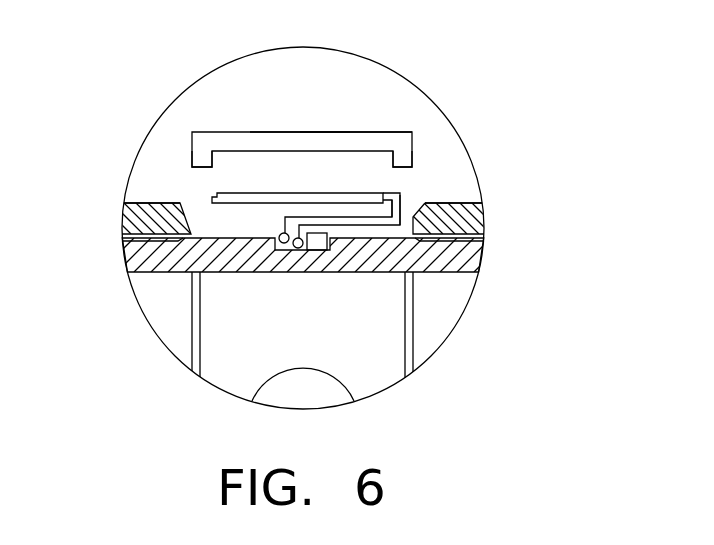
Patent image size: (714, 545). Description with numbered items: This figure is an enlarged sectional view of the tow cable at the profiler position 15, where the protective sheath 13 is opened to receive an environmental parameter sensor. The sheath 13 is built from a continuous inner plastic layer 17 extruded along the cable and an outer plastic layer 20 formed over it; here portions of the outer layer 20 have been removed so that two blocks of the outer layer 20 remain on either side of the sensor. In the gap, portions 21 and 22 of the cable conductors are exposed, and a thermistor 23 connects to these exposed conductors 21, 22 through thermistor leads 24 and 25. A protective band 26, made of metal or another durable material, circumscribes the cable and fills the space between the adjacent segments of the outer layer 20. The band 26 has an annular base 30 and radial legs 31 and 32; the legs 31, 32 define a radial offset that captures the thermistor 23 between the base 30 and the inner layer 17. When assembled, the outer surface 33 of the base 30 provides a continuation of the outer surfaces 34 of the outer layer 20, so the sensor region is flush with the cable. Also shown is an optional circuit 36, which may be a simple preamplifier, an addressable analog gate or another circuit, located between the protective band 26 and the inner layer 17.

The protective sheath 13 is at (492, 260).
The profiler position 15 is at (383, 370).
The inner plastic layer 17 is at (143, 263).
The outer plastic layer 20 is at (150, 218).
The exposed conductor portion 21 is at (285, 248).
The exposed conductor portion 22 is at (300, 250).
The thermistor 23 is at (210, 196).
The thermistor lead 24 is at (400, 198).
The thermistor lead 25 is at (388, 210).
The protective band 26 is at (248, 140).
The annular base 30 is at (325, 140).
The radial leg 31 is at (198, 160).
The radial leg 32 is at (410, 160).
The outer surface of base 33 is at (282, 133).
The outer surfaces of outer layer 34 is at (140, 200).
The circuit 36 is at (317, 250).